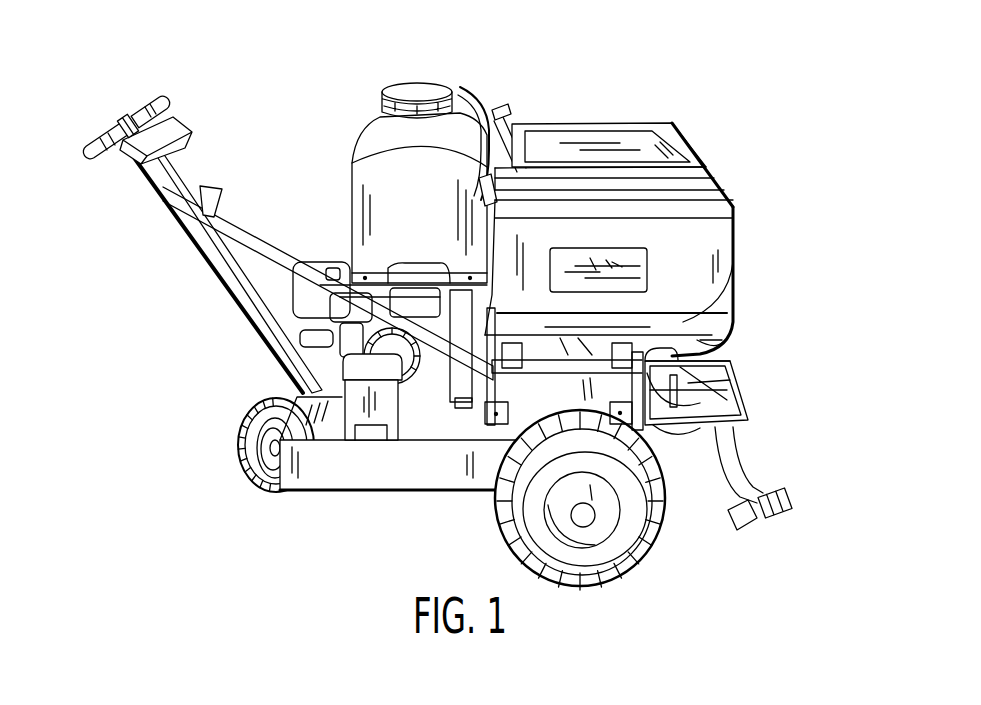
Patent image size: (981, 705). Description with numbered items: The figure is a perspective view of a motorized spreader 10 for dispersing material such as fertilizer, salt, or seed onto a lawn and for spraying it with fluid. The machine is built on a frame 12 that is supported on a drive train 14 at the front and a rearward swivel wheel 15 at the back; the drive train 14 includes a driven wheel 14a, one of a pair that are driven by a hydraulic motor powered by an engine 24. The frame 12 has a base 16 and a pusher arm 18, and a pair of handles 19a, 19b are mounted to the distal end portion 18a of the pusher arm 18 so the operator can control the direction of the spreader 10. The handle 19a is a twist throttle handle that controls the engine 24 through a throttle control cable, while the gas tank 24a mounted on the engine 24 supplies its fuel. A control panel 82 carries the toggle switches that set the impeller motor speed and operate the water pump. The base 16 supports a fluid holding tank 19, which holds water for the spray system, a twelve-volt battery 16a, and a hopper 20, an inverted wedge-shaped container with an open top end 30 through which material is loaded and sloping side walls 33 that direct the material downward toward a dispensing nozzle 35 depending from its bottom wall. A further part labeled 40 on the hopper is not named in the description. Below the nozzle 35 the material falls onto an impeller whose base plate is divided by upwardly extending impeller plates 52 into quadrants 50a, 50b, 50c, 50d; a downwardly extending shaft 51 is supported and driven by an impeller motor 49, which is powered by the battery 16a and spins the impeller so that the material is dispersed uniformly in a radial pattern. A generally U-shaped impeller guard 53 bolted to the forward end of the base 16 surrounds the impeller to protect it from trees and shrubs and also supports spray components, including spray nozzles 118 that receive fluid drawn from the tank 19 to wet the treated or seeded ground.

The motorized spreader 10 is at (610, 67).
The frame 12 is at (260, 353).
The drive train 14 is at (652, 587).
The driven wheel 14a is at (660, 548).
The rearward swivel wheel 15 is at (243, 460).
The base 16 is at (432, 425).
The battery 16a is at (357, 410).
The pusher arm 18 is at (258, 200).
The distal end portion 18a is at (120, 115).
The fluid holding tank 19 is at (363, 137).
The twist throttle handle 19a is at (97, 140).
The handle 19b is at (157, 100).
The hopper 20 is at (731, 190).
The engine 24 is at (317, 330).
The gas tank 24a is at (333, 275).
The open top end 30 is at (673, 143).
The sloping side walls 33 is at (680, 325).
The dispensing nozzle 35 is at (730, 365).
The hopper body 40 is at (745, 243).
The impeller motor 49 is at (680, 435).
The quadrant 50a is at (750, 420).
The quadrant 50b is at (660, 390).
The quadrant 50c is at (647, 357).
The quadrant 50d is at (680, 349).
The shaft 51 is at (708, 427).
The impeller plates 52 is at (730, 387).
The impeller guard 53 is at (743, 400).
The control panel 82 is at (175, 135).
The spray nozzles 118 is at (780, 492).